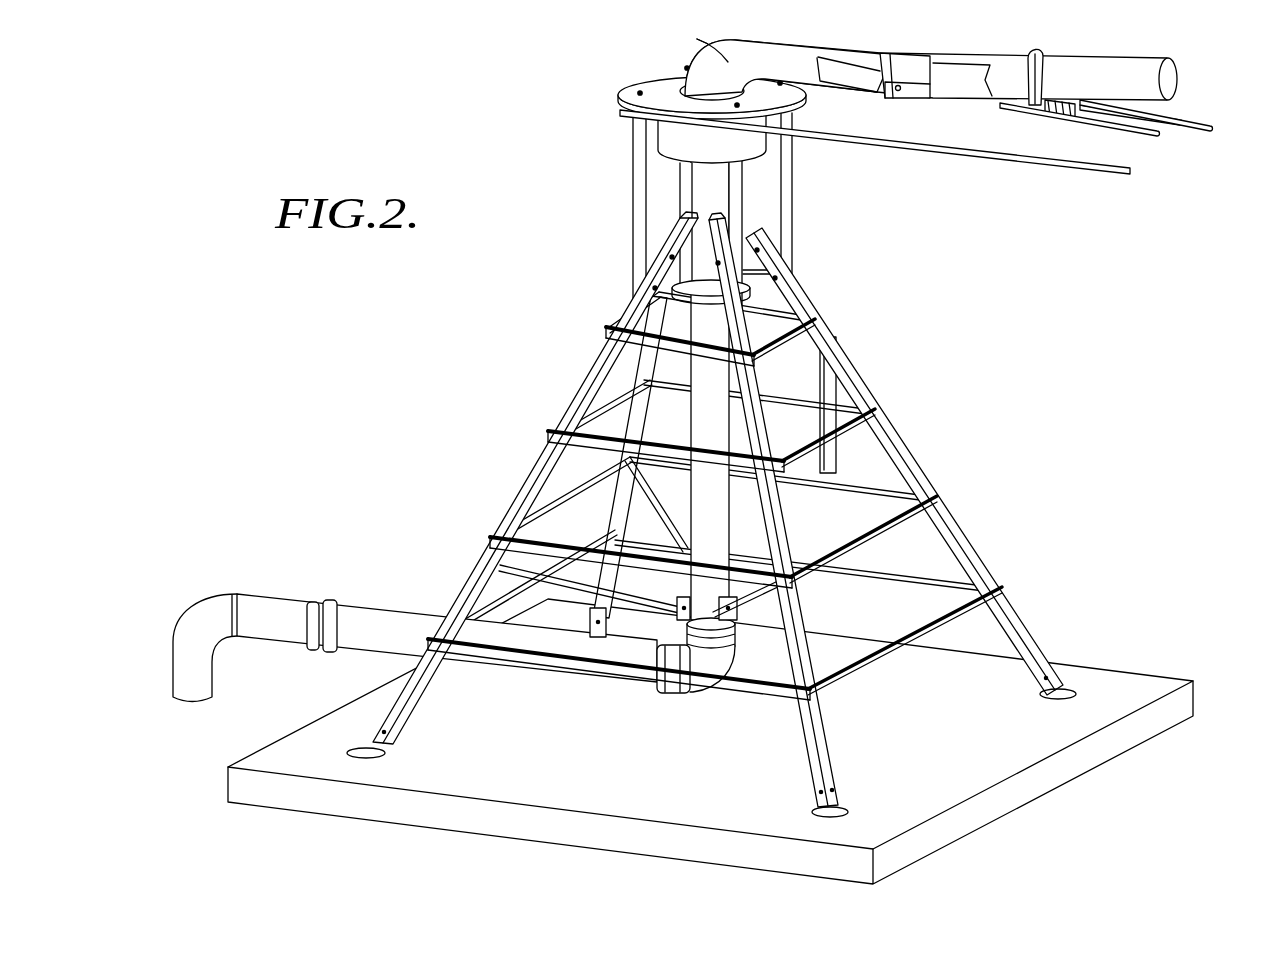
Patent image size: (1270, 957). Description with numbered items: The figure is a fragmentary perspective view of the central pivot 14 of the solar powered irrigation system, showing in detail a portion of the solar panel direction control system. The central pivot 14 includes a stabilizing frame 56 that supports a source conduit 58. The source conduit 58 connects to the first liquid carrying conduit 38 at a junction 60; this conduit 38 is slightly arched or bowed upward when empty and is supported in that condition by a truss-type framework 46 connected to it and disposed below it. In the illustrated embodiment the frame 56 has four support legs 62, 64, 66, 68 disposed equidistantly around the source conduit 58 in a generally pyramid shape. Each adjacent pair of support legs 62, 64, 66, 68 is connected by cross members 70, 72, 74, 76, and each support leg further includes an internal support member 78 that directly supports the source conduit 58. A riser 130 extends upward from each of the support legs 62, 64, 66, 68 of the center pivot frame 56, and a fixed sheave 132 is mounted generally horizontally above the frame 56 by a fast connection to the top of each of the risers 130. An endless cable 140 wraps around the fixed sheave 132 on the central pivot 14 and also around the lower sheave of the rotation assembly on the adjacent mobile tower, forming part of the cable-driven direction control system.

The central pivot 14 is at (972, 447).
The liquid carrying conduit 38 is at (1178, 80).
The truss-type framework 46 is at (1165, 158).
The stabilizing frame 56 is at (670, 426).
The source conduit 58 is at (726, 62).
The junction 60 is at (918, 113).
The support leg 62 is at (578, 404).
The support leg 64 is at (820, 732).
The support leg 66 is at (845, 378).
The support leg 68 is at (658, 366).
The cross member 70 is at (636, 330).
The cross member 72 is at (565, 445).
The cross member 74 is at (510, 570).
The cross member 76 is at (752, 688).
The internal support member 78 is at (580, 583).
The riser 130 is at (640, 205).
The fixed sheave 132 is at (650, 77).
The endless cable 140 is at (1055, 168).